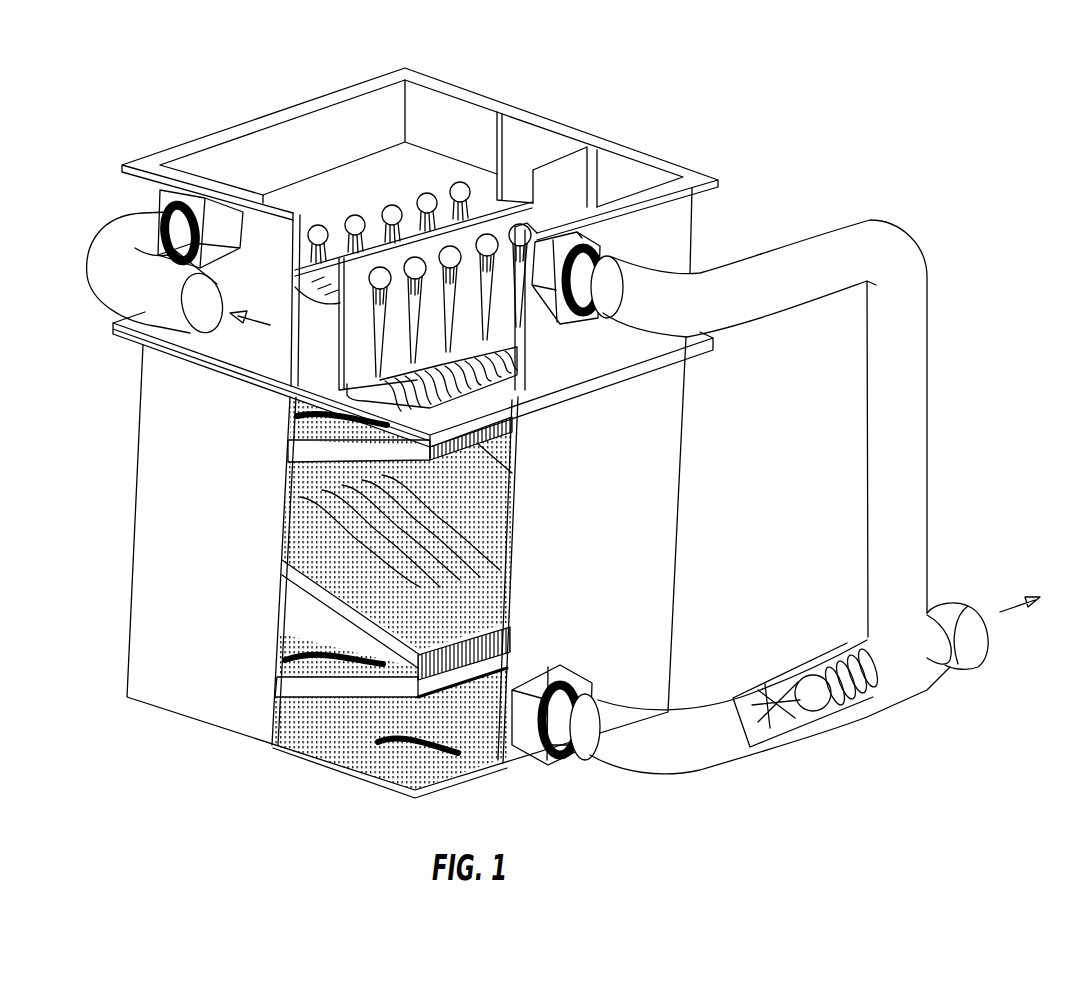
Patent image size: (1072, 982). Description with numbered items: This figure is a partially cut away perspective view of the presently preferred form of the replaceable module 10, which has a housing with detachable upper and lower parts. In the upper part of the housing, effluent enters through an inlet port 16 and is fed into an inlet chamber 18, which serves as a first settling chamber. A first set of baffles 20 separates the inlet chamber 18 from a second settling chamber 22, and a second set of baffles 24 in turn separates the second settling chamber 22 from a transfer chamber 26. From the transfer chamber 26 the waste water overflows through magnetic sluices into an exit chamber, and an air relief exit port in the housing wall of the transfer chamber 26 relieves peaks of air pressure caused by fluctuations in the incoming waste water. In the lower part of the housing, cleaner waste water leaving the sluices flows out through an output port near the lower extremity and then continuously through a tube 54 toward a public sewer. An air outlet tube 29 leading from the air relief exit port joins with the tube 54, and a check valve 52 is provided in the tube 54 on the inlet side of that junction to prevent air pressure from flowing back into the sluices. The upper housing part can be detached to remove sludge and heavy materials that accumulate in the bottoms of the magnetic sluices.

The module 10 is at (220, 593).
The inlet port 16 is at (115, 258).
The inlet chamber 18 is at (337, 155).
The first set of baffles 20 is at (483, 168).
The second settling chamber 22 is at (510, 203).
The second set of baffles 24 is at (580, 200).
The transfer chamber 26 is at (630, 263).
The air outlet tube 29 is at (905, 328).
The check valve 52 is at (815, 690).
The tube 54 is at (967, 620).